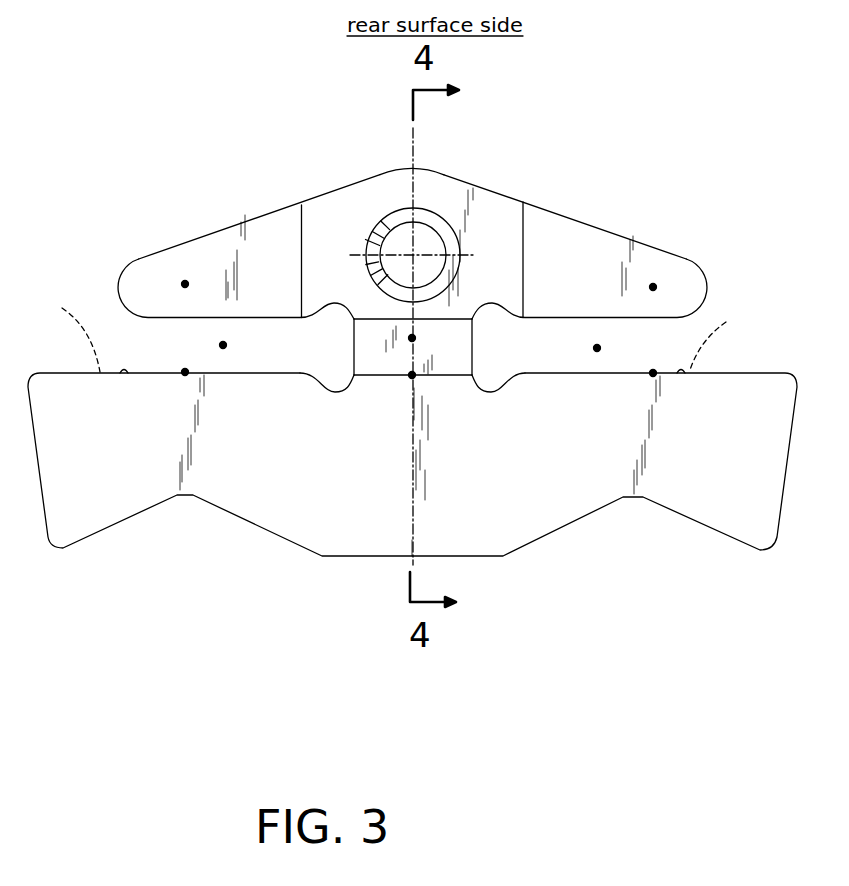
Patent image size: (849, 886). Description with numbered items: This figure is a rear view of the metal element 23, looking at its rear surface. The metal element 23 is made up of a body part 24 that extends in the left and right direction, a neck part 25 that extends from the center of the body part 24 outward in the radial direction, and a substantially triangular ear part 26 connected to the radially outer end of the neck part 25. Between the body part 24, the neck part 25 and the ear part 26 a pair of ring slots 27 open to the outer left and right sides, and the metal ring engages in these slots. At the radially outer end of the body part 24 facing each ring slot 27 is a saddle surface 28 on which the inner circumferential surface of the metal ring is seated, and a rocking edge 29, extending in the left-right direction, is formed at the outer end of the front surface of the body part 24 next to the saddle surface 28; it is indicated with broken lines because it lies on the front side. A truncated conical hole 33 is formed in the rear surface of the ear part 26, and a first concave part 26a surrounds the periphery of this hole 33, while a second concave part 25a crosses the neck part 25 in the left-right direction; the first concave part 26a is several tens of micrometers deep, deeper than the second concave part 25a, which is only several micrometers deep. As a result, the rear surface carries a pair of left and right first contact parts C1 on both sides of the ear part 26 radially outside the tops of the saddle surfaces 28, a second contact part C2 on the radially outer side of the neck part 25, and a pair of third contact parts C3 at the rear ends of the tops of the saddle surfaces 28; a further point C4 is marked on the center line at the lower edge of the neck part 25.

The metal element 23 is at (536, 177).
The body part 24 is at (589, 520).
The neck part 25 is at (474, 346).
The second concave part 25a is at (388, 373).
The ear part 26 is at (260, 213).
The first concave part 26a is at (358, 200).
The ring slot 27 is at (220, 344).
The saddle surface 28 is at (120, 374).
The rocking edge 29 is at (395, 333).
The truncated conical hole 33 is at (427, 233).
The first contact part C1 is at (185, 282).
The second contact part C2 is at (415, 336).
The third contact part C3 is at (185, 375).
The center point C4 is at (414, 378).